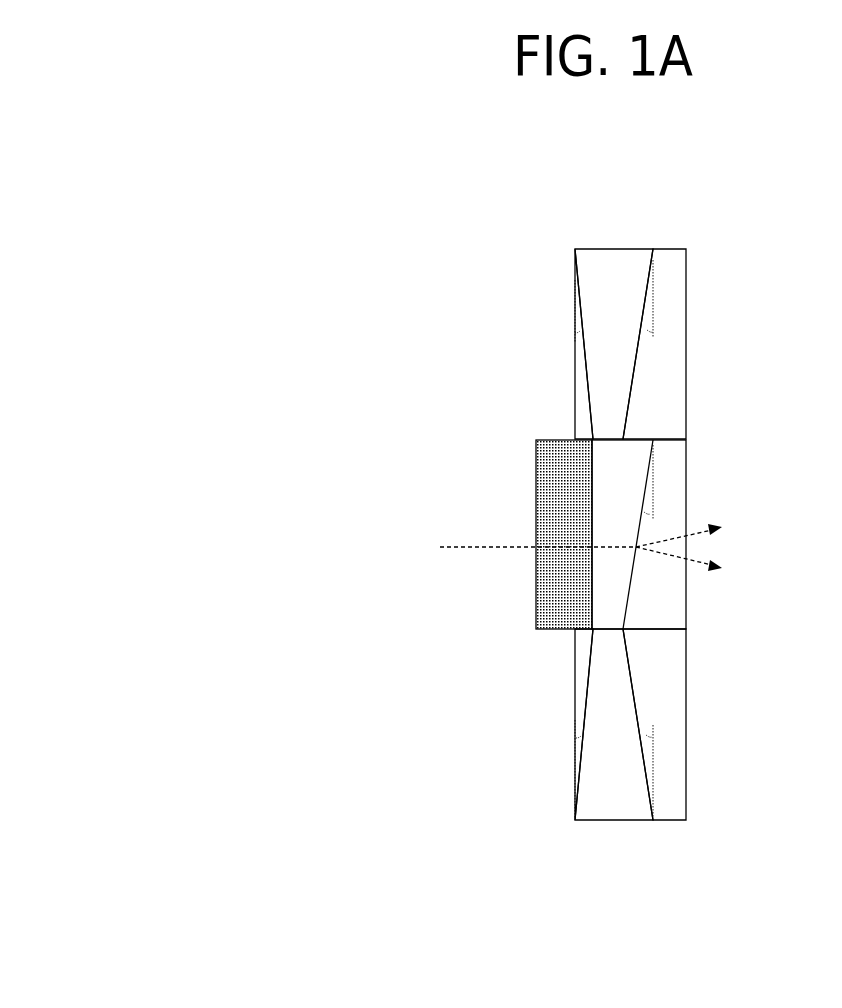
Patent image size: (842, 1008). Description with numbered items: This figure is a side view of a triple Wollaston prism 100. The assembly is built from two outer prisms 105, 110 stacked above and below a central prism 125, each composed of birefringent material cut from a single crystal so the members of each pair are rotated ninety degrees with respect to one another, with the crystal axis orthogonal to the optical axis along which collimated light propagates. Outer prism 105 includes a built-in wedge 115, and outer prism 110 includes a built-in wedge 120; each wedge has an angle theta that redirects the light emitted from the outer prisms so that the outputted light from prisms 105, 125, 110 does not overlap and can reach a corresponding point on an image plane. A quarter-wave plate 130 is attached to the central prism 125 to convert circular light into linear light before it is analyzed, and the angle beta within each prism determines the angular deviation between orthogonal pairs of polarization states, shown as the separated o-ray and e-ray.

The triple Wollaston prism 100 is at (148, 145).
The outer prism 105 is at (600, 309).
The outer prism 110 is at (670, 805).
The wedge 115 is at (574, 378).
The wedge 120 is at (574, 705).
The central prism 125 is at (682, 447).
The quarter-wave plate 130 is at (553, 592).